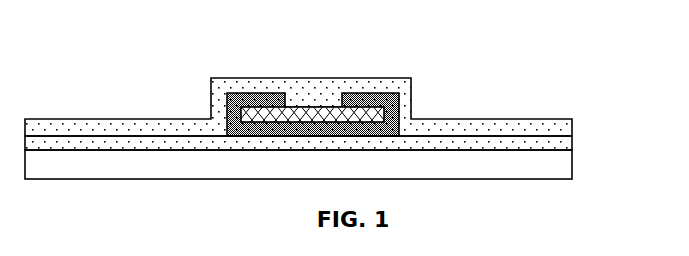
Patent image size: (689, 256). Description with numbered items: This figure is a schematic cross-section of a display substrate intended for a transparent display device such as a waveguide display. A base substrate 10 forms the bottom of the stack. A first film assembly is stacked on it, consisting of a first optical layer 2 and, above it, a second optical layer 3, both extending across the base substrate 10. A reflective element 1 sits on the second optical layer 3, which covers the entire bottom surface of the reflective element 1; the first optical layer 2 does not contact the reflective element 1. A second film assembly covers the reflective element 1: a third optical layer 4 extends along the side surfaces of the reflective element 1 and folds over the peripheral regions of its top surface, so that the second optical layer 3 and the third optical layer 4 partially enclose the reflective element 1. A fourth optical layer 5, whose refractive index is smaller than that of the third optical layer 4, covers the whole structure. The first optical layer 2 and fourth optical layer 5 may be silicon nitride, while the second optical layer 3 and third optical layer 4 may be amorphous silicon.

The reflective element 1 is at (300, 113).
The first optical layer 2 is at (555, 143).
The second optical layer 3 is at (370, 129).
The third optical layer 4 is at (370, 98).
The fourth optical layer 5 is at (557, 125).
The base substrate 10 is at (555, 170).